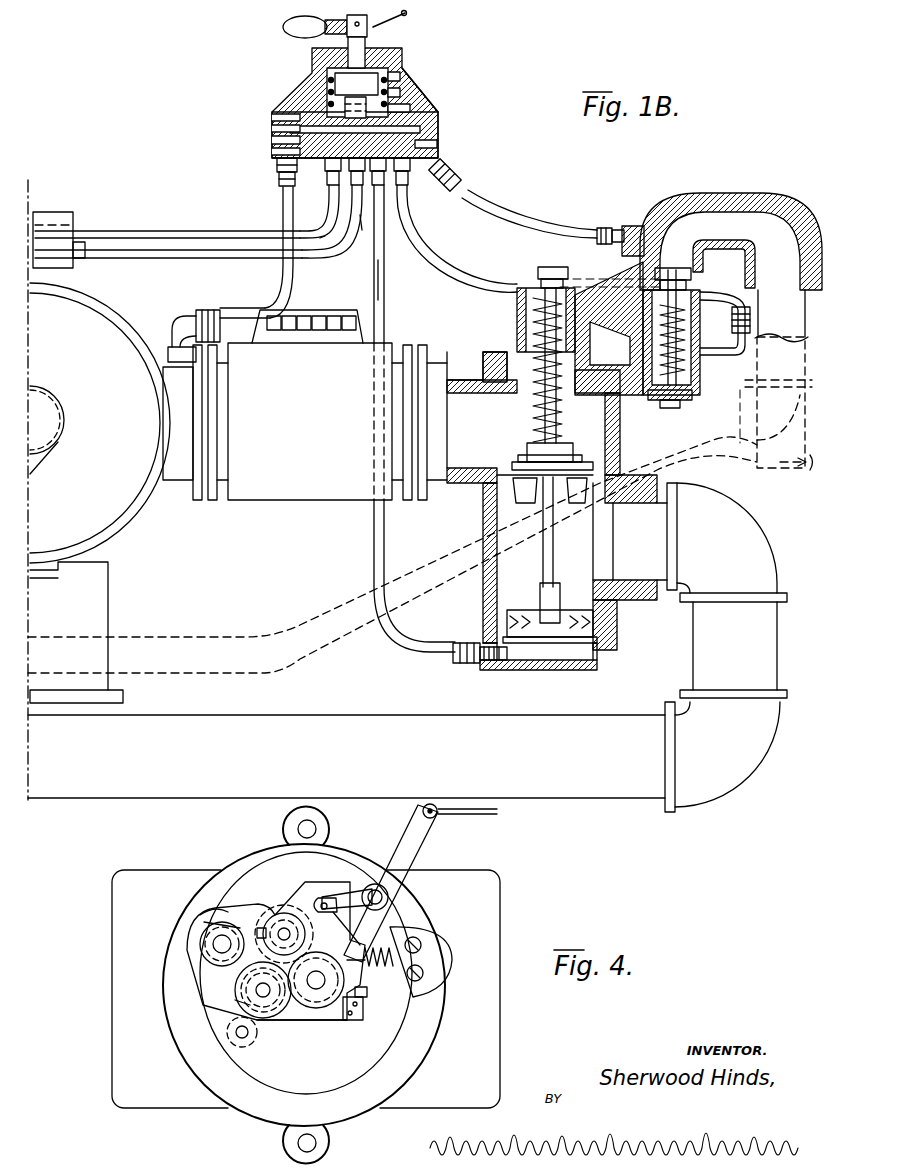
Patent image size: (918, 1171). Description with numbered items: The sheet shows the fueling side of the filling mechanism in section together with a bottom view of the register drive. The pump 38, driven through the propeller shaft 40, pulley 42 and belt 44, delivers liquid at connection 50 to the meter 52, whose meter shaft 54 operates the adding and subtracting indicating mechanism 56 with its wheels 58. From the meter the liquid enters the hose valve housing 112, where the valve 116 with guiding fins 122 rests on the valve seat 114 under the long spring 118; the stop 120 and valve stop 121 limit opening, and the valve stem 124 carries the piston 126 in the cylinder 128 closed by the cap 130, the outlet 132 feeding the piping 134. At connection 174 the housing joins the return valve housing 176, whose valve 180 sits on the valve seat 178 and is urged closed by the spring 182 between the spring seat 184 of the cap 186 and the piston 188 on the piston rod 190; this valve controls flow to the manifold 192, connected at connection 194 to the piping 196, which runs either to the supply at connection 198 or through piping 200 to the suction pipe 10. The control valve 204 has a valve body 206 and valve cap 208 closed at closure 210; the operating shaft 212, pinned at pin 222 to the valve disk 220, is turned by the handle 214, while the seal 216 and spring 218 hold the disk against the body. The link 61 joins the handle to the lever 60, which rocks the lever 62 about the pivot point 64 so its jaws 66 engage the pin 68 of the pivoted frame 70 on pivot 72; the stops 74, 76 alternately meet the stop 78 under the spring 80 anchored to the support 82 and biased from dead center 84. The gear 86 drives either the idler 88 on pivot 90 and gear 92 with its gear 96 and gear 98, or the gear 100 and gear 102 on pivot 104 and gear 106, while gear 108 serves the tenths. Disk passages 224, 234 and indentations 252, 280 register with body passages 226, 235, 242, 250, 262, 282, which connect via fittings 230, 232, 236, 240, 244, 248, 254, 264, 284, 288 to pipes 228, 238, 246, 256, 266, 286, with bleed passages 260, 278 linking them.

In FIG. 1B, the suction pipe 10 is at (402, 500).
In FIG. 1B, the pump 38 is at (118, 540).
In FIG. 1B, the propeller shaft 40 is at (50, 404).
In FIG. 1B, the pulley 42 is at (60, 420).
In FIG. 1B, the belt 44 is at (45, 458).
In FIG. 1B, the pump outlet connection 50 is at (175, 482).
In FIG. 1B, the meter 52 is at (255, 500).
In FIG. 1B, the indicating mechanism 56 is at (303, 312).
In FIG. 1B, the counter wheels 58 is at (322, 318).
In FIG. 1B, the hose valve housing 112 is at (465, 483).
In FIG. 1B, the valve seat 114 is at (593, 470).
In FIG. 1B, the valve 116 is at (582, 462).
In FIG. 1B, the spring 118 is at (533, 428).
In FIG. 1B, the stop 120 is at (545, 400).
In FIG. 1B, the valve stop 121 is at (527, 450).
In FIG. 1B, the guiding fins 122 is at (575, 503).
In FIG. 1B, the valve stem 124 is at (553, 548).
In FIG. 1B, the piston 126 is at (593, 620).
In FIG. 1B, the cylinder 128 is at (597, 640).
In FIG. 1B, the cap 130 is at (600, 668).
In FIG. 1B, the outlet 132 is at (665, 480).
In FIG. 1B, the piping 134 is at (693, 645).
In FIG. 1B, the connection 174 is at (460, 380).
In FIG. 1B, the return valve housing 176 is at (517, 332).
In FIG. 1B, the valve seat 178 is at (668, 268).
In FIG. 1B, the valve 180 is at (672, 285).
In FIG. 1B, the spring 182 is at (692, 395).
In FIG. 1B, the spring seat 184 is at (678, 404).
In FIG. 1B, the cap 186 is at (720, 355).
In FIG. 1B, the piston 188 is at (728, 245).
In FIG. 1B, the piston rod 190 is at (635, 325).
In FIG. 1B, the manifold 192 is at (762, 200).
In FIG. 1B, the connection 194 is at (768, 292).
In FIG. 1B, the piping 196 is at (790, 366).
In FIG. 1B, the connection 198 is at (805, 470).
In FIG. 1B, the piping 200 is at (187, 674).
In FIG. 1B, the control valve 204 is at (438, 112).
In FIG. 1B, the valve body 206 is at (437, 144).
In FIG. 1B, the valve cap 208 is at (425, 90).
In FIG. 1B, the closure 210 is at (402, 56).
In FIG. 1B, the operating shaft 212 is at (367, 30).
In FIG. 1B, the operating lever or handle 214 is at (283, 24).
In FIG. 1B, the seal 216 is at (365, 44).
In FIG. 1B, the spring 218 is at (400, 76).
In FIG. 1B, the valve disk 220 is at (400, 92).
In FIG. 1B, the pin 222 is at (335, 80).
In FIG. 1B, the through passage 224 is at (410, 107).
In FIG. 1B, the passage 226 is at (410, 170).
In FIG. 1B, the pipe 228 is at (440, 242).
In FIG. 1B, the fitting 230 is at (408, 182).
In FIG. 1B, the fitting 232 is at (768, 420).
In FIG. 1B, the through passage 234 is at (348, 108).
In FIG. 1B, the passage 235 is at (386, 236).
In FIG. 1B, the fitting 236 is at (360, 248).
In FIG. 1B, the pipe 238 is at (384, 323).
In FIG. 1B, the fitting 240 is at (462, 664).
In FIG. 1B, the passage 242 is at (420, 130).
In FIG. 1B, the fitting 244 is at (462, 166).
In FIG. 1B, the pipe 246 is at (515, 218).
In FIG. 1B, the fitting 248 is at (610, 226).
In FIG. 1B, the passage 250 is at (272, 138).
In FIG. 1B, the indentation 252 is at (328, 110).
In FIG. 1B, the fitting 254 is at (325, 252).
In FIG. 1B, the pipe 256 is at (160, 258).
In FIG. 1B, the bleed passage 260 is at (357, 230).
In FIG. 1B, the passage 262 is at (272, 150).
In FIG. 1B, the fitting 264 is at (325, 205).
In FIG. 1B, the pipe 266 is at (155, 231).
In FIG. 1B, the bleed passage 278 is at (294, 200).
In FIG. 1B, the indentation or passage 280 is at (272, 127).
In FIG. 1B, the passage 282 is at (272, 115).
In FIG. 1B, the fitting 284 is at (277, 173).
In FIG. 1B, the pipe 286 is at (278, 300).
In FIG. 1B, the fitting 288 is at (196, 312).
In FIG. 4, the meter shaft 54 is at (283, 927).
In FIG. 4, the lever 60 is at (420, 842).
In FIG. 1B, the link 61 is at (410, 14).
In FIG. 4, the link 61 is at (488, 815).
In FIG. 4, the lever 62 is at (372, 885).
In FIG. 4, the pivot point 64 is at (388, 892).
In FIG. 4, the jaws 66 is at (330, 898).
In FIG. 4, the pin 68 is at (290, 913).
In FIG. 4, the pivoted frame 70 is at (320, 1010).
In FIG. 4, the pivot 72 is at (265, 998).
In FIG. 4, the stop 74 is at (363, 1012).
In FIG. 4, the stop 76 is at (375, 950).
In FIG. 4, the stop 78 is at (367, 992).
In FIG. 4, the spring 80 is at (425, 925).
In FIG. 4, the support 82 is at (421, 943).
In FIG. 4, the dead center 84 is at (423, 970).
In FIG. 4, the gear 86 is at (265, 920).
In FIG. 4, the idler 88 is at (320, 1012).
In FIG. 4, the pivot 90 is at (313, 990).
In FIG. 4, the gear 92 is at (240, 1004).
In FIG. 4, the gear 96 is at (246, 990).
In FIG. 4, the gear 98 is at (260, 926).
In FIG. 4, the gear 100 is at (200, 940).
In FIG. 4, the gear 102 is at (204, 925).
In FIG. 4, the pivot 104 is at (213, 948).
In FIG. 4, the gear 106 is at (203, 915).
In FIG. 4, the gear 108 is at (228, 1035).